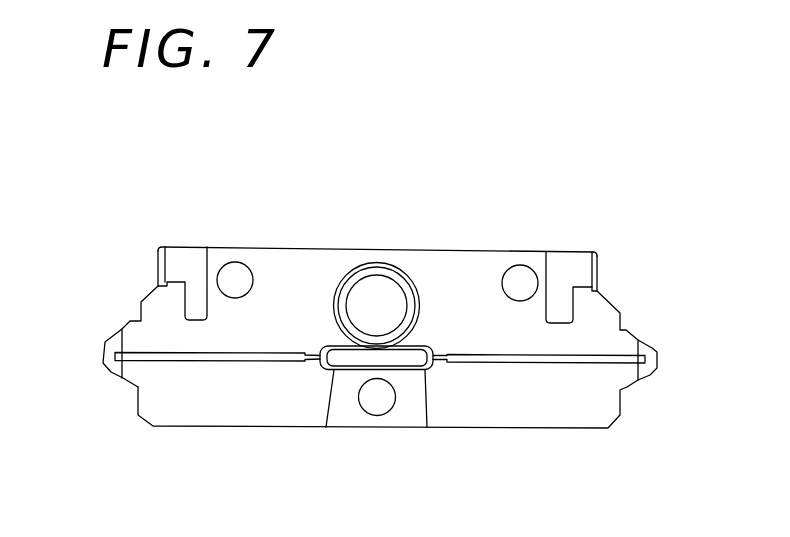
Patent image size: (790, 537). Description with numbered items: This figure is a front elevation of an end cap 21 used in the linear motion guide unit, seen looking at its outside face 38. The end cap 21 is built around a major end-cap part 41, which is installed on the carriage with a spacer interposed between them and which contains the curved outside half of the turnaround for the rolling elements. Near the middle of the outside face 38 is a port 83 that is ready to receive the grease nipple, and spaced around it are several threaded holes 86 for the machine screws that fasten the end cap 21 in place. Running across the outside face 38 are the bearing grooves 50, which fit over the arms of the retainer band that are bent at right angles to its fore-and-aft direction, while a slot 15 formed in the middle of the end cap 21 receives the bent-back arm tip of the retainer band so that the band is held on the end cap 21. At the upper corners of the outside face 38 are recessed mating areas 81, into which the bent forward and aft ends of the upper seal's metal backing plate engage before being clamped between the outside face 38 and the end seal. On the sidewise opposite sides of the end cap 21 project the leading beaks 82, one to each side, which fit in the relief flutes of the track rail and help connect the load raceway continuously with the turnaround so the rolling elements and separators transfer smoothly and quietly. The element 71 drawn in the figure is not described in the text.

The end cap 21 is at (464, 244).
The major end-cap part 41 is at (445, 282).
The outside face 38 is at (292, 298).
The recessed mating area 81 is at (185, 265).
The leading beak 82 is at (105, 345).
The threaded hole 86 is at (237, 273).
The port 83 is at (377, 287).
The bearing groove 50 is at (235, 357).
The bearing portion 71 is at (326, 427).
The slot 15 is at (427, 427).